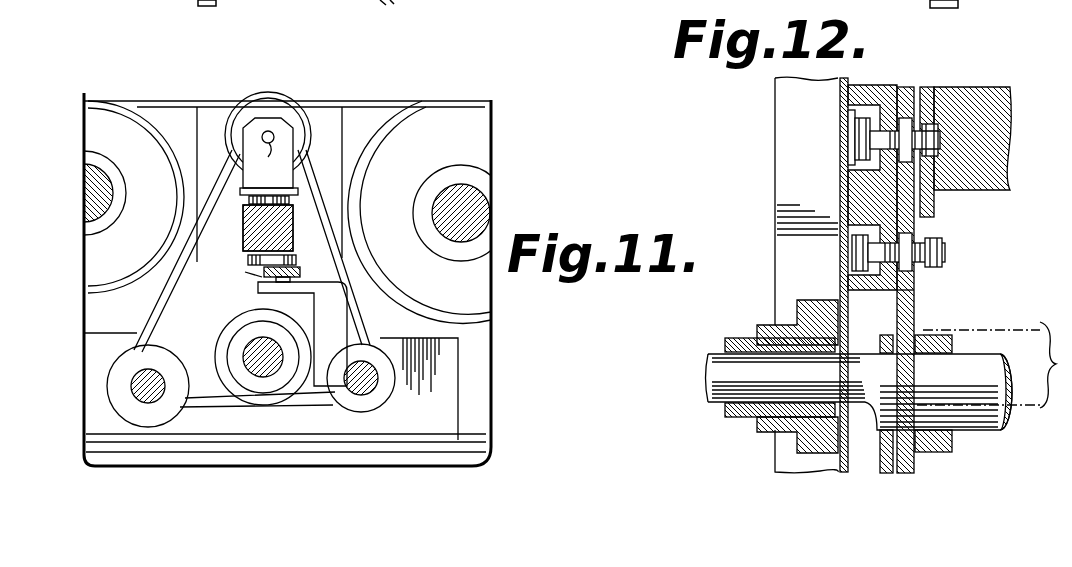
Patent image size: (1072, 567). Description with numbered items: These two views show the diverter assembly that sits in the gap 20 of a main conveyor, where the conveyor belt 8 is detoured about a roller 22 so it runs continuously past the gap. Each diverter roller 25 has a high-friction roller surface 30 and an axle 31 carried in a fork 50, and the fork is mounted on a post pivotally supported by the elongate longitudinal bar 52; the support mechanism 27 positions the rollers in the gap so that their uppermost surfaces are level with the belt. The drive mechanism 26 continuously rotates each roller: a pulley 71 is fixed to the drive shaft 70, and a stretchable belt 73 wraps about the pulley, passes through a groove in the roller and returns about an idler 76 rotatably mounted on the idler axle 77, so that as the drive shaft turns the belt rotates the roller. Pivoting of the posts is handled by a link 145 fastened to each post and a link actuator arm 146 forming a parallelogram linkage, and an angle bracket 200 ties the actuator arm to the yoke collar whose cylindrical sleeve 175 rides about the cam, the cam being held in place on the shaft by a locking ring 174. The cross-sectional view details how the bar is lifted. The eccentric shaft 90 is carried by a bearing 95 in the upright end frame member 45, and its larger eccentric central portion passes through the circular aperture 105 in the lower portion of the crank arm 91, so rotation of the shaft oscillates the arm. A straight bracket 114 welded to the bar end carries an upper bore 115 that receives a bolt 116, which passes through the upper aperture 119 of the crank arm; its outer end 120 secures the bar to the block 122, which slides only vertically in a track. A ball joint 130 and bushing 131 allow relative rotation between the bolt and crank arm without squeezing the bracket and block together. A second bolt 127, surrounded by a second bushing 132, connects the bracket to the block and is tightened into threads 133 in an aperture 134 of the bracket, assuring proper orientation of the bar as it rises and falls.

In FIG. 11, the belt 8 is at (110, 100).
In FIG. 11, the roller 22 is at (148, 136).
In FIG. 11, the gap 20 is at (332, 118).
In FIG. 11, the diverter roller 25 is at (283, 100).
In FIG. 11, the drive mechanism 26 is at (318, 160).
In FIG. 11, the roller surface 30 is at (245, 102).
In FIG. 11, the axle 31 is at (263, 151).
In FIG. 11, the fork 50 is at (244, 186).
In FIG. 11, the support mechanism 27 is at (243, 243).
In FIG. 11, the longitudinal bar 52 is at (294, 244).
In FIG. 12, the longitudinal bar 52 is at (1010, 106).
In FIG. 11, the link 145 is at (252, 263).
In FIG. 11, the link actuator arm 146 is at (332, 270).
In FIG. 11, the angle bracket 200 is at (357, 276).
In FIG. 11, the cylindrical sleeve 175 is at (250, 310).
In FIG. 11, the locking ring 174 is at (240, 358).
In FIG. 11, the eccentric shaft 90 is at (245, 370).
In FIG. 12, the eccentric shaft 90 is at (993, 355).
In FIG. 11, the belt 73 is at (158, 296).
In FIG. 11, the drive shaft 70 is at (162, 372).
In FIG. 11, the pulley 71 is at (116, 410).
In FIG. 11, the idler 76 is at (358, 405).
In FIG. 11, the idler axle 77 is at (366, 384).
In FIG. 12, the block 122 is at (840, 92).
In FIG. 12, the bushing 131 is at (848, 108).
In FIG. 12, the outer end 120 is at (858, 134).
In FIG. 12, the upper aperture 119 is at (905, 118).
In FIG. 12, the straight bracket 114 is at (928, 92).
In FIG. 12, the upper bore 115 is at (938, 133).
In FIG. 12, the bolt 116 is at (938, 148).
In FIG. 12, the ball joint 130 is at (915, 182).
In FIG. 12, the threads 133 is at (928, 243).
In FIG. 12, the second bolt 127 is at (925, 252).
In FIG. 12, the aperture 134 is at (940, 262).
In FIG. 12, the second bushing 132 is at (915, 293).
In FIG. 12, the circular aperture 105 is at (905, 352).
In FIG. 12, the bearing 95 is at (734, 412).
In FIG. 12, the first upright end frame member 45 is at (778, 458).
In FIG. 12, the crank arm 91 is at (912, 473).